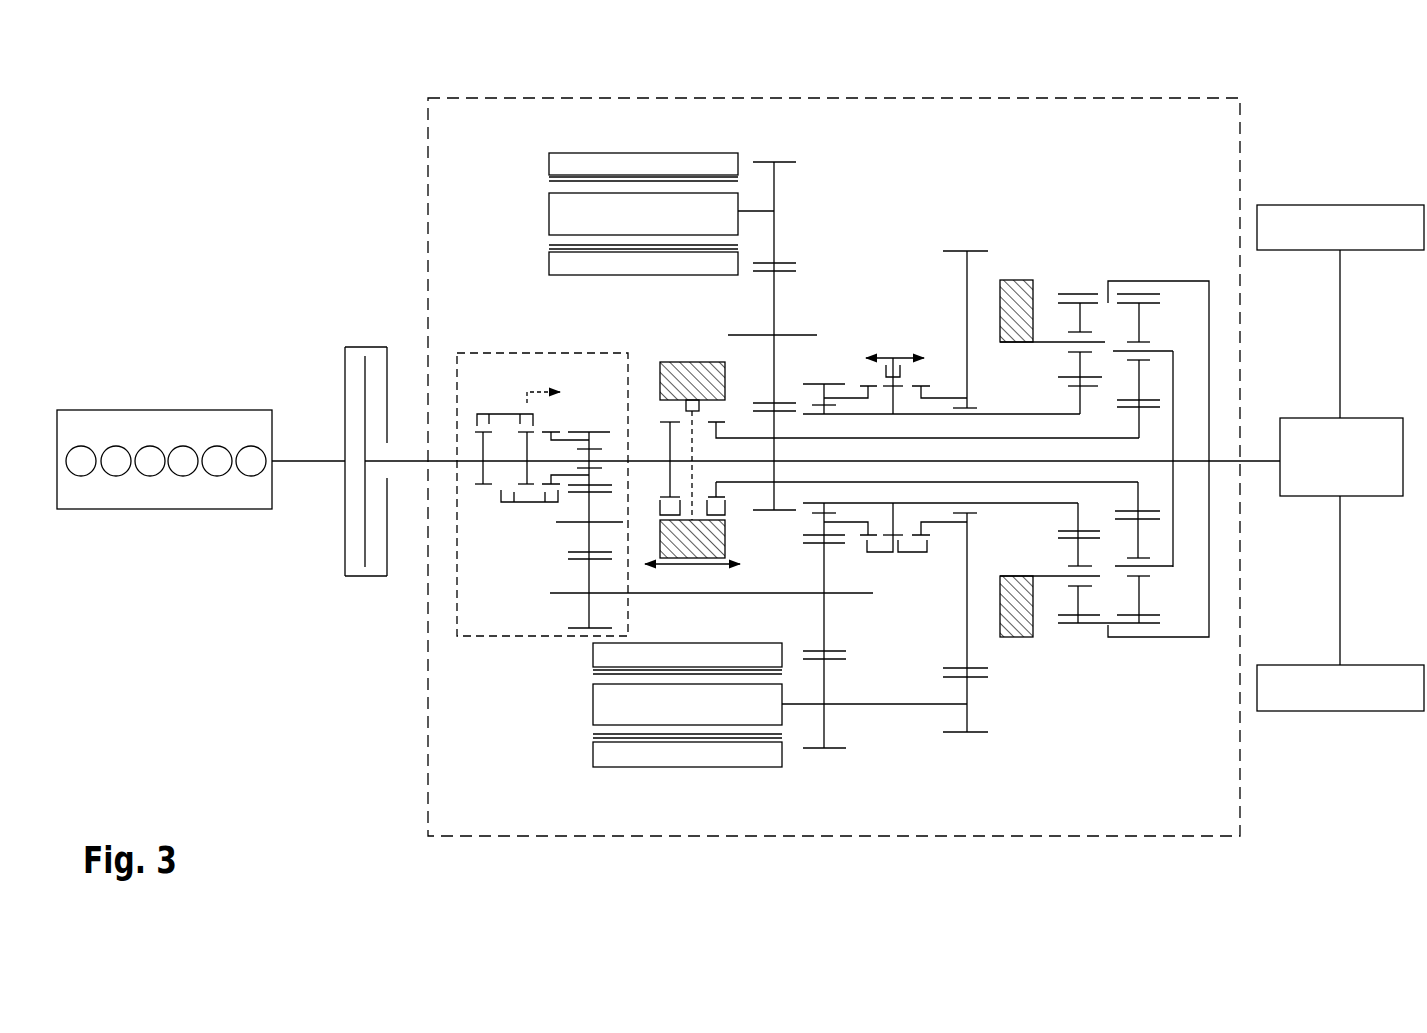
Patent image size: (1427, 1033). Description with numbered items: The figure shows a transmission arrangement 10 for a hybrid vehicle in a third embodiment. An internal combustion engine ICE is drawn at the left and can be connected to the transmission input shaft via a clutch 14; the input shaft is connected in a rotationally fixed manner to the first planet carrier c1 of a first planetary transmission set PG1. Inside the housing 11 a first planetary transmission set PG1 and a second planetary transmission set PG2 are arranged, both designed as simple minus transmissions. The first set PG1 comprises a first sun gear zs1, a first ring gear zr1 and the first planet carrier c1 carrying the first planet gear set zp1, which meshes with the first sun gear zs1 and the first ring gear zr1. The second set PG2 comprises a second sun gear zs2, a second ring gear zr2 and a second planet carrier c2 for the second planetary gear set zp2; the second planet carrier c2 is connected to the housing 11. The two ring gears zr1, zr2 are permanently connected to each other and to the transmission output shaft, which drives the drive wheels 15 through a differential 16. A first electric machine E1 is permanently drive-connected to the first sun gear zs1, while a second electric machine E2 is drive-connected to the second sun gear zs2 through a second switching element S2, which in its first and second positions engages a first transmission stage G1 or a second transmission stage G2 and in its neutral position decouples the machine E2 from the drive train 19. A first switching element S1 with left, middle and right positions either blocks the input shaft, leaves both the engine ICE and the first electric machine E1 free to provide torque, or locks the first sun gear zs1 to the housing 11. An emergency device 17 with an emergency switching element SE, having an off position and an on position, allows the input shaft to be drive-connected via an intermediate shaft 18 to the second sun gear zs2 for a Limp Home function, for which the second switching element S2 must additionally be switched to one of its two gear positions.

The transmission arrangement 10 is at (418, 135).
The housing 11 is at (1018, 278).
The clutch 14 is at (363, 347).
The drive wheels 15 is at (1340, 688).
The differential 16 is at (1340, 435).
The emergency device 17 is at (497, 640).
The intermediate shaft 18 is at (722, 596).
The drive train 19 is at (1013, 505).
The internal combustion engine ICE is at (190, 410).
The first electric machine E1 is at (661, 214).
The second electric machine E2 is at (780, 705).
The first switching element S1 is at (676, 345).
The second switching element S2 is at (886, 330).
The emergency switching element SE is at (489, 498).
The first planetary transmission set PG1 is at (1212, 448).
The second planetary transmission set PG2 is at (1080, 448).
The first planet gear set zp1 is at (1139, 322).
The second planetary gear set zp2 is at (1080, 358).
The first sun gear zs1 is at (1138, 497).
The second sun gear zs2 is at (1080, 390).
The first ring gear zr1 is at (1150, 626).
The second ring gear zr2 is at (1080, 626).
The first planet carrier c1 is at (1173, 528).
The second planet carrier c2 is at (1046, 578).
The first transmission stage G1 is at (968, 737).
The second transmission stage G2 is at (826, 752).